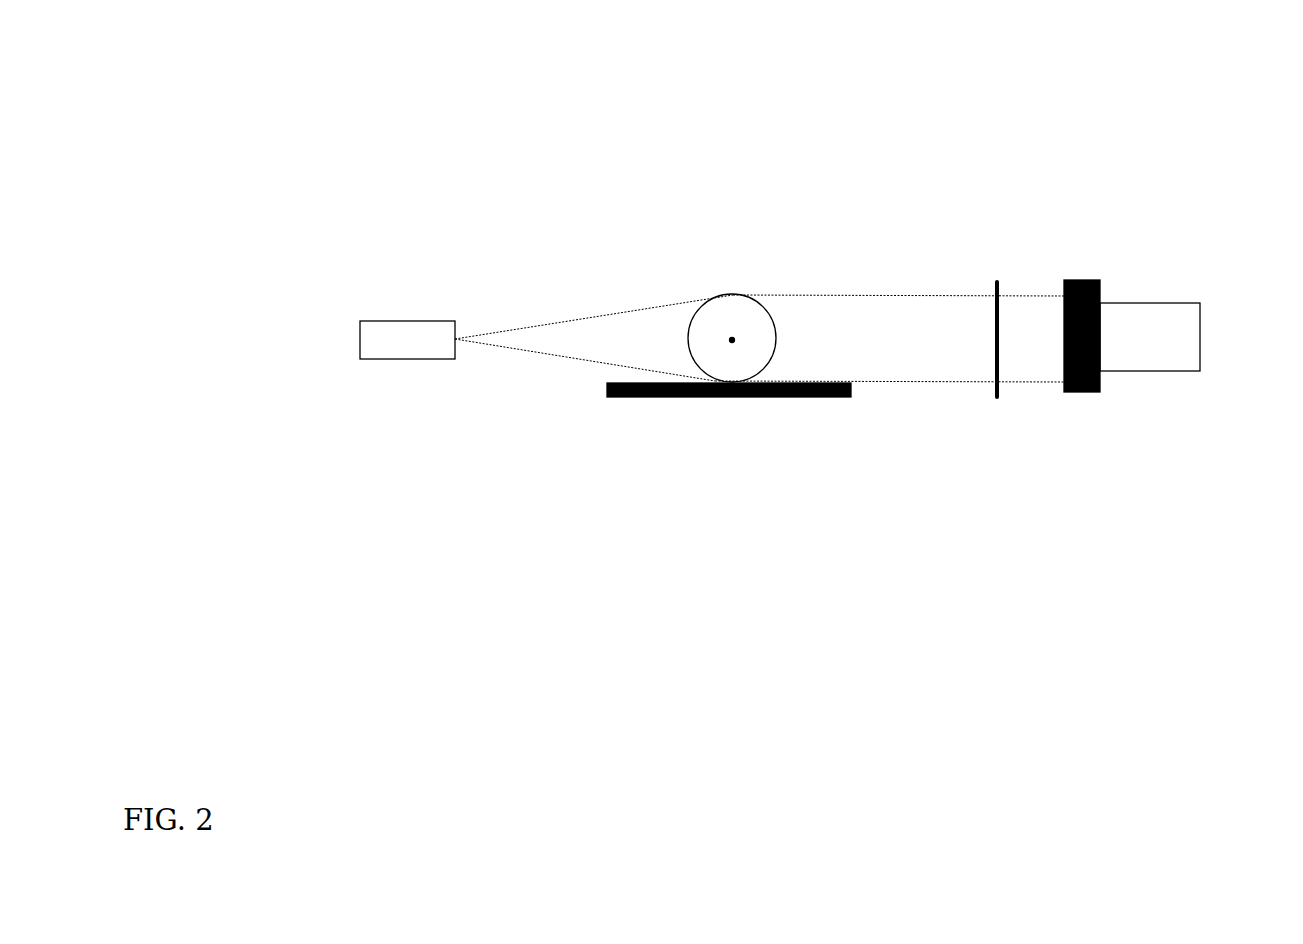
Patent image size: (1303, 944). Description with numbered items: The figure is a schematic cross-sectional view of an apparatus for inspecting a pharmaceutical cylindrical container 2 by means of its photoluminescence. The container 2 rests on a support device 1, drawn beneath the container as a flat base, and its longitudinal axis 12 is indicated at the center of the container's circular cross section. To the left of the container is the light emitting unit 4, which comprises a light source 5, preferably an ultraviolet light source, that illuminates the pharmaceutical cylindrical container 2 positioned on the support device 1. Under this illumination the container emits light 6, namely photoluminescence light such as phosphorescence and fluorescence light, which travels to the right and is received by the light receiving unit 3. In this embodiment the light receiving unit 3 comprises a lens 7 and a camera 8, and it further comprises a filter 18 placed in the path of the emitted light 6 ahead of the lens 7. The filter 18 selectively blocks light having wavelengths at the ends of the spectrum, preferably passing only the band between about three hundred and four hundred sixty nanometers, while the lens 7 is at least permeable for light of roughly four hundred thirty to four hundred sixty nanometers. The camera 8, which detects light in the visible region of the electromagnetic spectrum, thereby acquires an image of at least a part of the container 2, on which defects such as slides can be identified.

The support device 1 is at (631, 431).
The pharmaceutical cylindrical container 2 is at (745, 295).
The light receiving unit 3 is at (1225, 165).
The light emitting unit 4 is at (358, 281).
The light source 5 is at (404, 351).
The emitted light 6 is at (930, 381).
The lens 7 is at (1083, 280).
The camera 8 is at (1142, 347).
The longitudinal axis 12 is at (732, 340).
The filter 18 is at (995, 292).